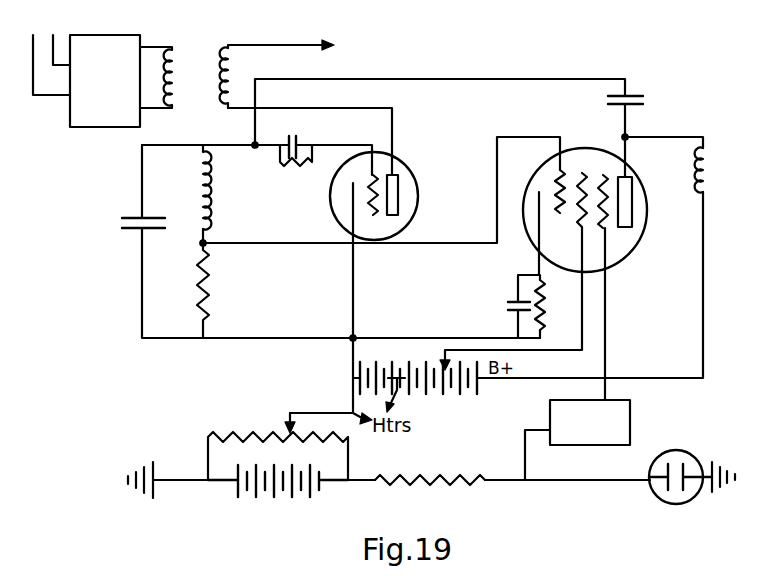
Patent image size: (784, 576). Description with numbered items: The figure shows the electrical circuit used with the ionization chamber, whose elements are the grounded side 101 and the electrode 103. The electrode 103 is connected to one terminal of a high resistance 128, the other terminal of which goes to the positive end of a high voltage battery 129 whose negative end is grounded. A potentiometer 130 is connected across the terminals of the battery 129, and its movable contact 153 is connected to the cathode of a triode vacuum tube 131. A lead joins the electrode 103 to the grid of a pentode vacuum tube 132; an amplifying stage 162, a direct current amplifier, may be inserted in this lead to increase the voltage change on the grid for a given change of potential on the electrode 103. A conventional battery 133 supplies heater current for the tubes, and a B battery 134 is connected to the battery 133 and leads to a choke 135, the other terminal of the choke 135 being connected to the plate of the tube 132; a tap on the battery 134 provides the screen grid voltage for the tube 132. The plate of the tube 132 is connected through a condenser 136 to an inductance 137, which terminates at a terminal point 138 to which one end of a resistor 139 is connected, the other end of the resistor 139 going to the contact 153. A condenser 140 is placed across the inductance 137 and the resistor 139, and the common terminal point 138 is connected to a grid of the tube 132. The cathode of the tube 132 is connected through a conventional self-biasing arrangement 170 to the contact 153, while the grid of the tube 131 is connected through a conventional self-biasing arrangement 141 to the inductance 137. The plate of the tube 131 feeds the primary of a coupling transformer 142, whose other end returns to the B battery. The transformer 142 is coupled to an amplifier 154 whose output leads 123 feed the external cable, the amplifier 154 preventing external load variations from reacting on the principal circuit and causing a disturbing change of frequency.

The leads 123 is at (49, 52).
The amplifier 154 is at (121, 81).
The coupling transformer 142 is at (274, 68).
The self-biasing arrangement 141 is at (292, 140).
The triode vacuum tube 131 is at (410, 160).
The condenser 136 is at (639, 89).
The pentode vacuum tube 132 is at (585, 199).
The choke 135 is at (724, 170).
The inductance 137 is at (227, 194).
The condenser 140 is at (128, 212).
The terminal point 138 is at (212, 235).
The resistor 139 is at (224, 290).
The self-biasing arrangement 170 is at (547, 305).
The battery 133 is at (372, 364).
The B battery 134 is at (420, 388).
The amplifying stage 162 is at (590, 422).
The side of ionization chamber 101 is at (690, 468).
The electrode of ionization chamber 103 is at (665, 483).
The potentiometer 130 is at (222, 425).
The movable contact 153 is at (286, 420).
The high voltage battery 129 is at (278, 490).
The high resistance 128 is at (430, 494).